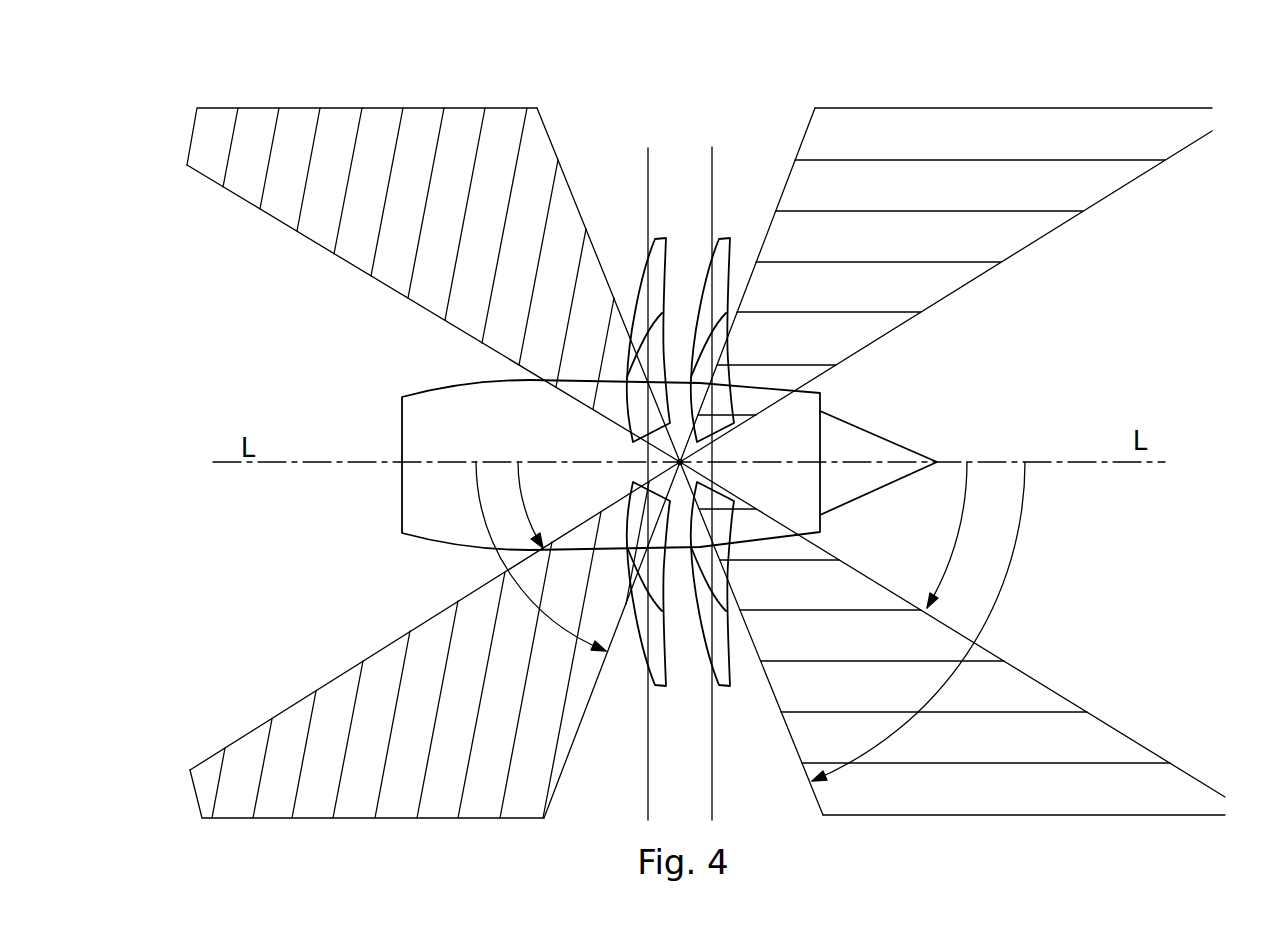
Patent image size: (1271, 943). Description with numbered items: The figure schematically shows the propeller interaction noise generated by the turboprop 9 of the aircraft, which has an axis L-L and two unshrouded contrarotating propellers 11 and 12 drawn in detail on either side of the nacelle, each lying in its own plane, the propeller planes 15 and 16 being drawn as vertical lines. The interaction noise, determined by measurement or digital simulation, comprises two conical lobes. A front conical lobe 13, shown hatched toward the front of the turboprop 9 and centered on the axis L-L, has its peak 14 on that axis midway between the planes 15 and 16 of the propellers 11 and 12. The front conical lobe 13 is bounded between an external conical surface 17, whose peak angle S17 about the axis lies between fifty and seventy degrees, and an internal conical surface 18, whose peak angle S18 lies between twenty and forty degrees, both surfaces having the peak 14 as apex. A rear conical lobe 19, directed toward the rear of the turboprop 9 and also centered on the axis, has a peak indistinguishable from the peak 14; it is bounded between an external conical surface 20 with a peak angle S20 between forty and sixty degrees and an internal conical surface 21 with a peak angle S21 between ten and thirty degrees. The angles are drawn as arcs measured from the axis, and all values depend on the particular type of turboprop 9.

The turboprop 9 is at (425, 424).
The contrarotating propeller 11 is at (638, 292).
The contrarotating propeller 12 is at (722, 250).
The front conical lobe 13 is at (330, 225).
The peak 14 is at (640, 453).
The propeller plane 15 is at (648, 170).
The propeller plane 16 is at (712, 160).
The external conical surface 17 is at (545, 120).
The internal conical surface 18 is at (240, 197).
The rear conical lobe 19 is at (1030, 222).
The external conical surface 20 is at (808, 118).
The internal conical surface 21 is at (940, 299).
The peak angle S17 is at (478, 497).
The peak angle S18 is at (527, 503).
The peak angle S20 is at (1015, 560).
The peak angle S21 is at (968, 535).